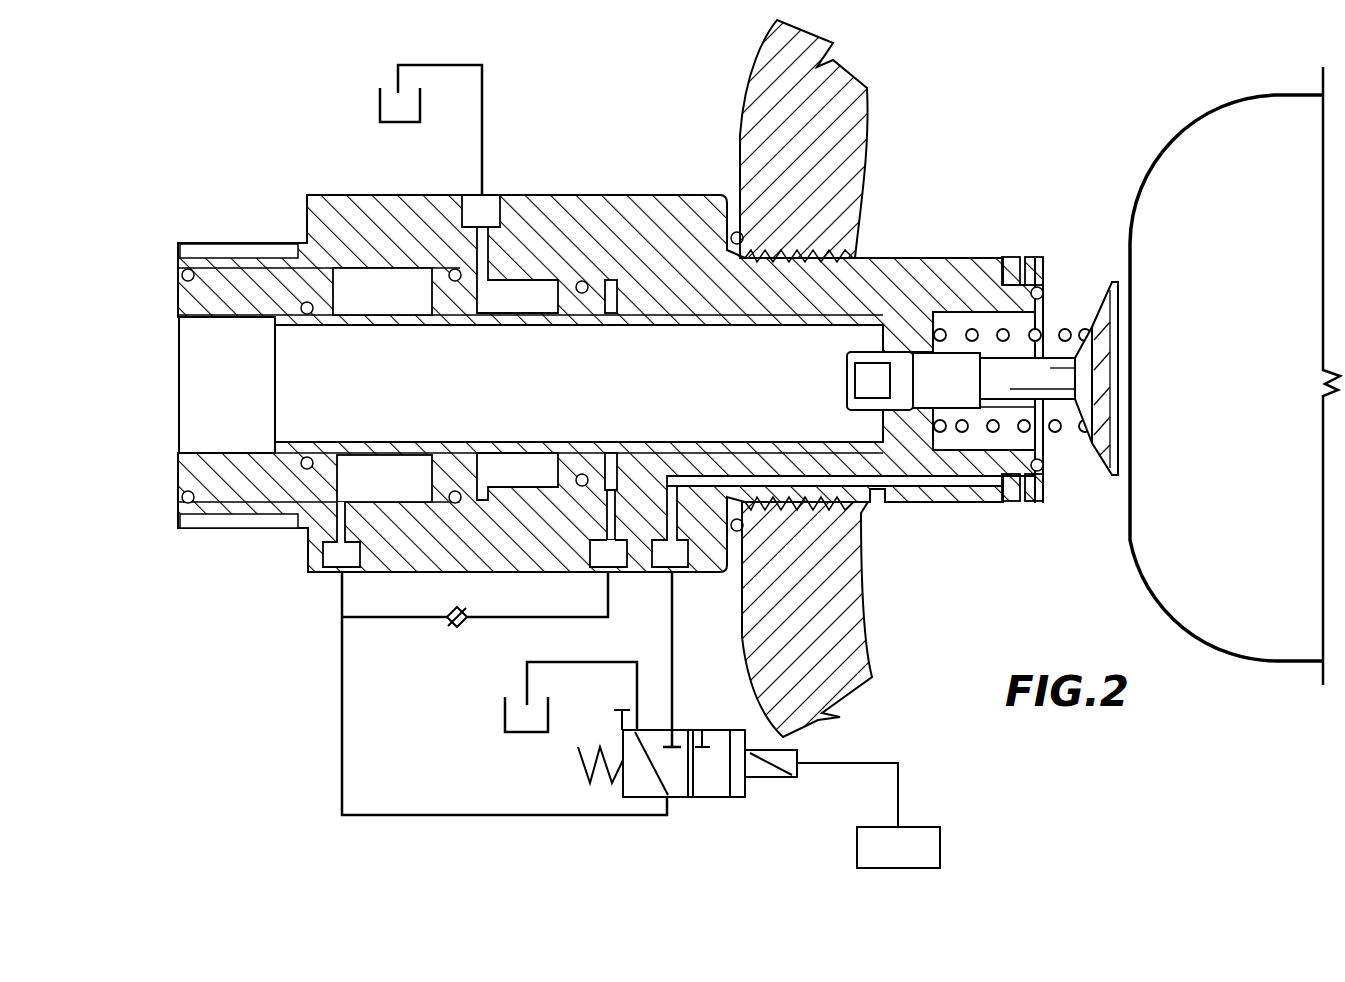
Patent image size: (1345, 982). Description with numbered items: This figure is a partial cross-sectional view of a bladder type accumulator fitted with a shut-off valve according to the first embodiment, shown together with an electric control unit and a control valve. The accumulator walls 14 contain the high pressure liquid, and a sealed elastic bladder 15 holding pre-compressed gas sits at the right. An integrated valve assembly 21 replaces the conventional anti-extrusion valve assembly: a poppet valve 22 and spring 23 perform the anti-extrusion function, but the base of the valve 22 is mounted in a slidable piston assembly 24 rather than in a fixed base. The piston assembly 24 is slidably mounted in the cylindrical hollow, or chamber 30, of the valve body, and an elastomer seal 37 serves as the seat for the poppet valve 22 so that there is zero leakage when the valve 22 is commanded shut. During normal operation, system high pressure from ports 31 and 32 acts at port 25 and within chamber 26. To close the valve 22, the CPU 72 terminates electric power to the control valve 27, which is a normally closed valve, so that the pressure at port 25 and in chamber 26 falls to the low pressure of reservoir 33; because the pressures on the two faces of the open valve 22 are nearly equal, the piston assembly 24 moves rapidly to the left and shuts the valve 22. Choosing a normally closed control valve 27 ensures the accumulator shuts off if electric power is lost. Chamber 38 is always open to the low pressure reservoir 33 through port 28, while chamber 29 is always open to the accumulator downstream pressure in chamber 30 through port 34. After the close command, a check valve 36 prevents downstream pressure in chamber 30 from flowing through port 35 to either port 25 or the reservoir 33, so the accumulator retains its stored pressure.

The accumulator walls 14 is at (745, 88).
The bladder 15 is at (1135, 560).
The integrated valve assembly 21 is at (684, 195).
The poppet valve 22 is at (1108, 380).
The spring 23 is at (1070, 330).
The slidable piston assembly 24 is at (843, 290).
The port 25 is at (333, 572).
The chamber 26 is at (372, 310).
The control valve 27 is at (712, 735).
The port 28 is at (490, 200).
The chamber 29 is at (612, 300).
The chamber 30 is at (761, 393).
The port 31 is at (882, 495).
The port 32 is at (678, 555).
The reservoir 33 is at (380, 104).
The port 34 is at (610, 445).
The port 35 is at (605, 575).
The check valve 36 is at (468, 625).
The elastomer seal 37 is at (1043, 291).
The chamber 38 is at (515, 300).
The CPU 72 is at (913, 861).